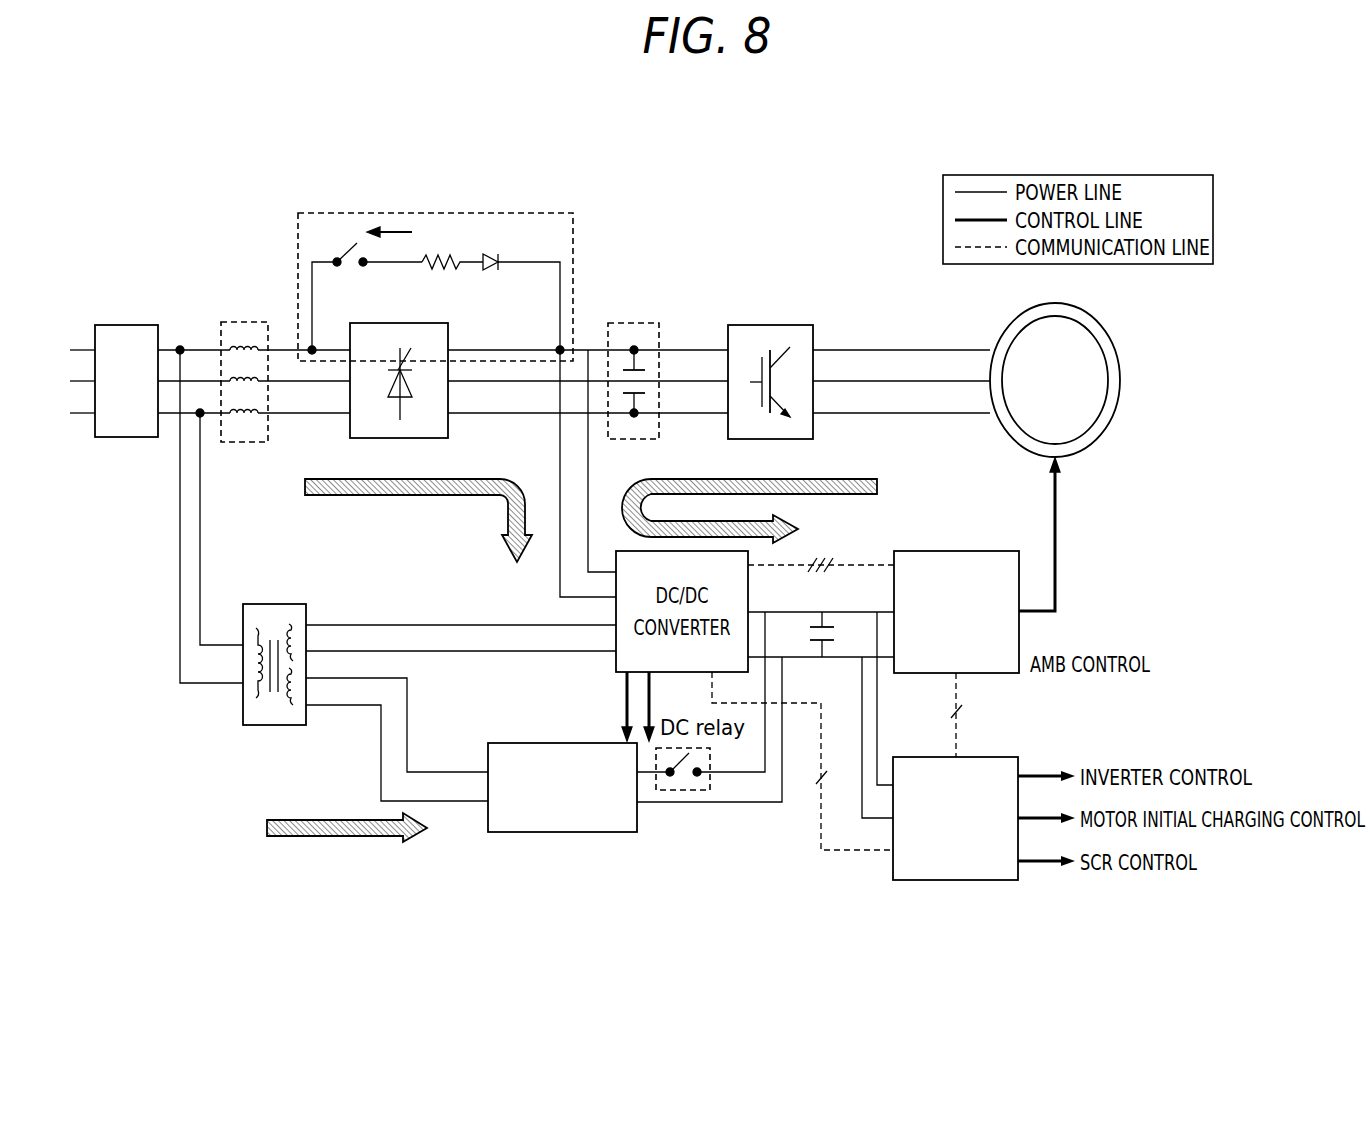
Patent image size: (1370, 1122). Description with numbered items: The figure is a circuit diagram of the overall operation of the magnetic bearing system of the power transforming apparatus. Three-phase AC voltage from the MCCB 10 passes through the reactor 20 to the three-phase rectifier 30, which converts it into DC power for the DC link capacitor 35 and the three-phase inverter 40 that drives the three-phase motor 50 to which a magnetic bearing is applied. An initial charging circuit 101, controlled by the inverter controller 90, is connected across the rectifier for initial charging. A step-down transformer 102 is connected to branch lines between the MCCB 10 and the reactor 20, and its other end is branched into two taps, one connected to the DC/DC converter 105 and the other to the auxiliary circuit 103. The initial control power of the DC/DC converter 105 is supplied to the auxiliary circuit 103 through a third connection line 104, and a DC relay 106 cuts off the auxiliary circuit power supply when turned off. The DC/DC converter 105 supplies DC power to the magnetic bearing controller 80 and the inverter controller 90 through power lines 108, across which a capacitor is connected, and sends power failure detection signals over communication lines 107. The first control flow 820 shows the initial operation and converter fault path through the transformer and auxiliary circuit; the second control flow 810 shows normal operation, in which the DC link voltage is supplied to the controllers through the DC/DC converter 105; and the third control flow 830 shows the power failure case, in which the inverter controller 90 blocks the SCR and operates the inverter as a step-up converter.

The MCCB 10 is at (125, 438).
The reactor 20 is at (243, 443).
The three-phase rectifier 30 is at (450, 432).
The DC link capacitor 35 is at (660, 430).
The three-phase inverter 40 is at (815, 430).
The three-phase motor 50 is at (1108, 425).
The magnetic bearing controller 80 is at (956, 550).
The inverter controller 90 is at (956, 881).
The initial charging circuit 101 is at (489, 213).
The step-down transformer 102 is at (275, 726).
The auxiliary circuit 103 is at (563, 833).
The third connection line 104 is at (626, 700).
The DC/DC converter 105 is at (616, 662).
The DC relay 106 is at (688, 791).
The communication lines 107 is at (847, 851).
The power lines 108 is at (860, 610).
The second control flow 810 is at (403, 496).
The first control flow 820 is at (333, 838).
The third control flow 830 is at (862, 479).